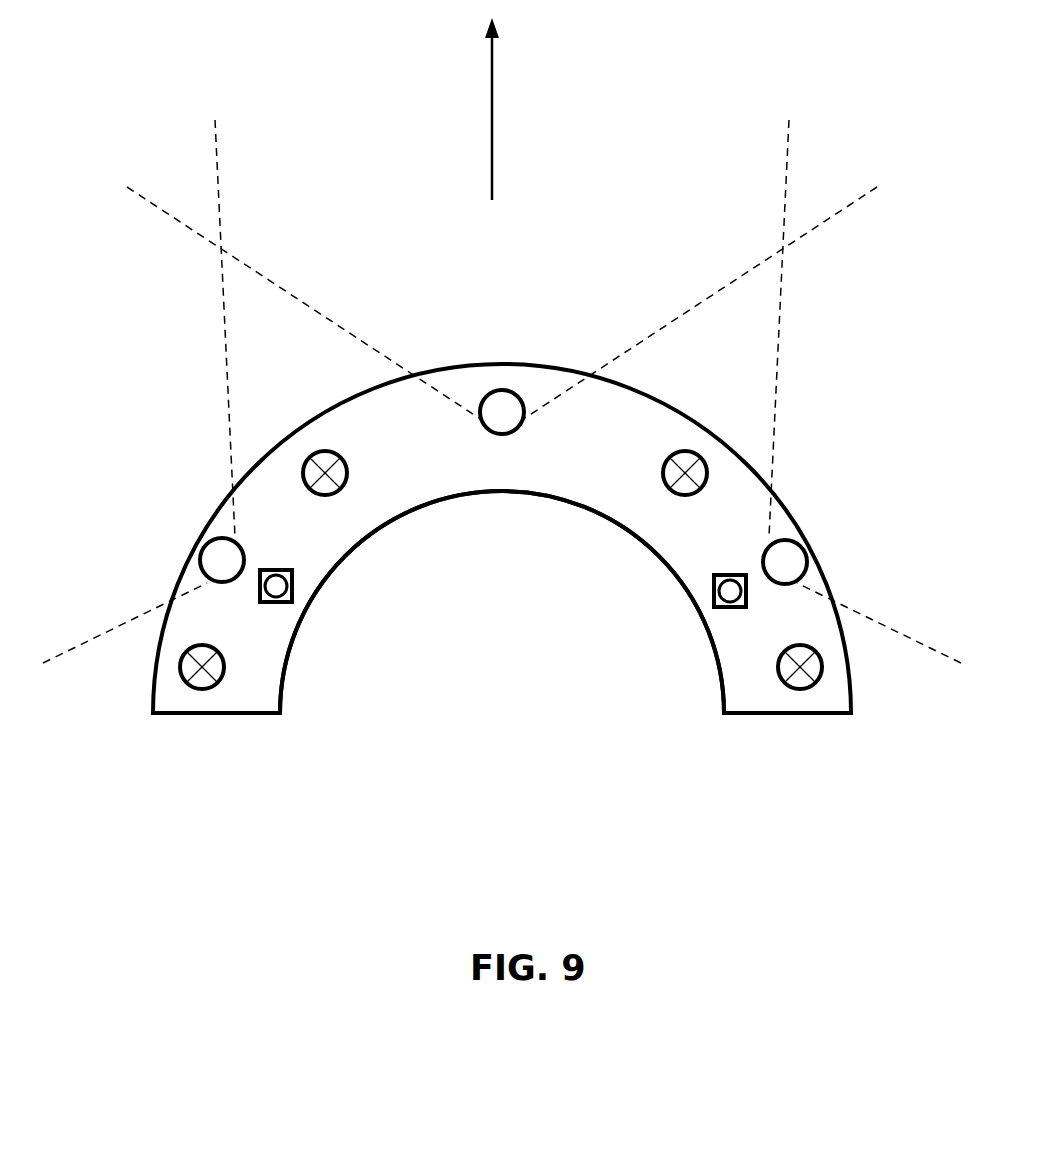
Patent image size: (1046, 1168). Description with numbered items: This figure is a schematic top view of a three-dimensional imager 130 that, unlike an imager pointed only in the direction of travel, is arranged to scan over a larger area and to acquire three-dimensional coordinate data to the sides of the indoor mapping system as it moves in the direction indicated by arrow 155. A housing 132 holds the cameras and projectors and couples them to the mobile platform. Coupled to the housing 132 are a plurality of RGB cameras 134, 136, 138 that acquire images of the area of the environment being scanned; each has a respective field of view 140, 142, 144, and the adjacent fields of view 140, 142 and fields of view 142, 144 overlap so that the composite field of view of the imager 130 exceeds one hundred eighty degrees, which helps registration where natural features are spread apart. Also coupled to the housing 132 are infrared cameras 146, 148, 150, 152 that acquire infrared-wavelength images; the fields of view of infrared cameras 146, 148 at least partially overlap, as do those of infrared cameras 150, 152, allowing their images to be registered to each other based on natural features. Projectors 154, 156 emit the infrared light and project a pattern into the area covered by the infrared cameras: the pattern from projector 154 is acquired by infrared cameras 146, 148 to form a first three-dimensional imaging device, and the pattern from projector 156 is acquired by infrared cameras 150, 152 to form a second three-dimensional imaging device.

The 3D imager 130 is at (526, 704).
The housing 132 is at (346, 560).
The camera 134 is at (201, 560).
The camera 136 is at (489, 398).
The camera 138 is at (808, 565).
The field of view 140 is at (112, 630).
The field of view 142 is at (718, 292).
The field of view 144 is at (780, 365).
The infrared camera 146 is at (196, 689).
The infrared camera 148 is at (310, 460).
The infrared camera 150 is at (690, 452).
The infrared camera 152 is at (782, 681).
The projector 154 is at (284, 605).
The projector 156 is at (716, 607).
The arrow 155 is at (491, 100).